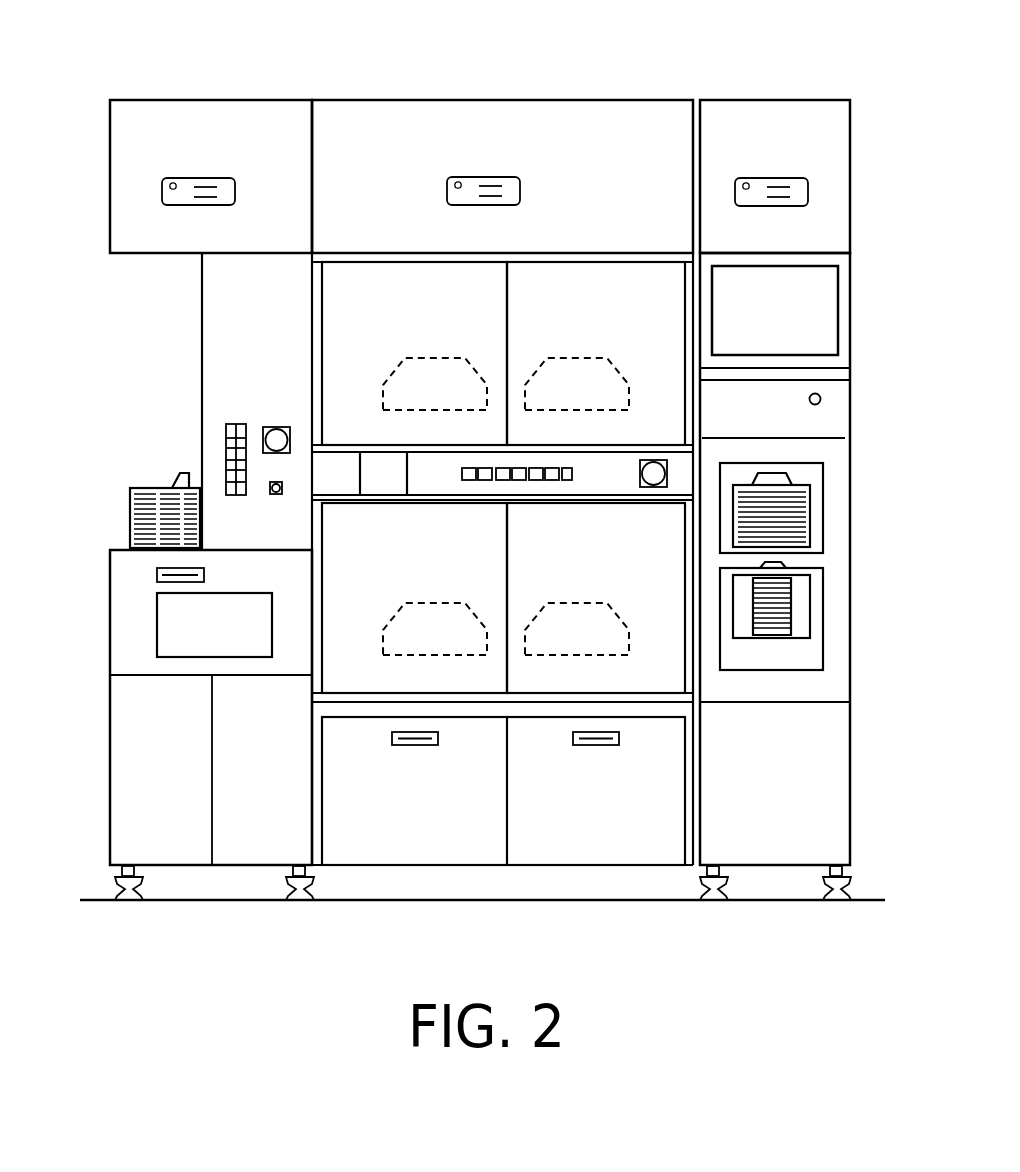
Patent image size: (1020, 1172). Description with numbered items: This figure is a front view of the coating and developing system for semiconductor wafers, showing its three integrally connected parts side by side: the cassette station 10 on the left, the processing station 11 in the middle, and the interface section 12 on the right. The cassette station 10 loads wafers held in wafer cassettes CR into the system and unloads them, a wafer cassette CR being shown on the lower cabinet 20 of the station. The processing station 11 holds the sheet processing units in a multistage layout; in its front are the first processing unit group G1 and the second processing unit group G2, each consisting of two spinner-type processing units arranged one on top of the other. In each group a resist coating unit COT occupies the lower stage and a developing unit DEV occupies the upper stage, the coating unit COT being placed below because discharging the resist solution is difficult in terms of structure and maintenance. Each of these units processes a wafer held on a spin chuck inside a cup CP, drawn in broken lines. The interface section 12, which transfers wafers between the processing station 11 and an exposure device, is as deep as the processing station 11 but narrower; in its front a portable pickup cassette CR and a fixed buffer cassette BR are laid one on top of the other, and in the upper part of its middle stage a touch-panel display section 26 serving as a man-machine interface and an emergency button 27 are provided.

The cassette station 10 is at (222, 100).
The processing station 11 is at (497, 100).
The interface section 12 is at (759, 100).
The cassette station lower unit 20 is at (122, 548).
The display section 26 is at (838, 308).
The emergency button 27 is at (821, 398).
The wafer cassette CR is at (818, 508).
The buffer cassette BR is at (800, 612).
The first processing unit group G1 is at (368, 252).
The second processing unit group G2 is at (600, 252).
The developing unit DEV is at (458, 322).
The resist coating unit COT is at (458, 558).
The cup CP is at (418, 357).